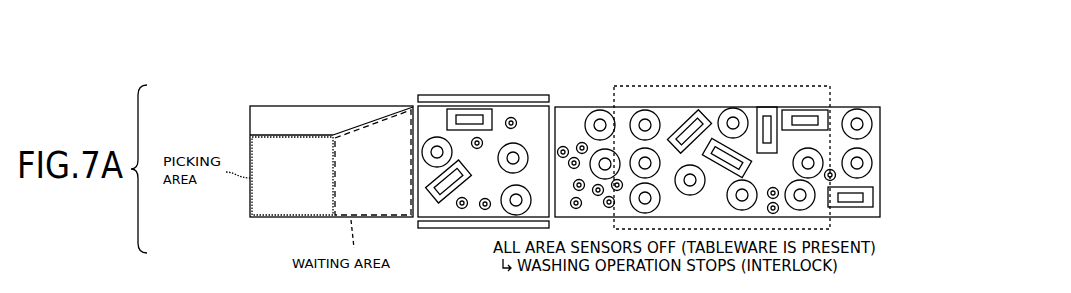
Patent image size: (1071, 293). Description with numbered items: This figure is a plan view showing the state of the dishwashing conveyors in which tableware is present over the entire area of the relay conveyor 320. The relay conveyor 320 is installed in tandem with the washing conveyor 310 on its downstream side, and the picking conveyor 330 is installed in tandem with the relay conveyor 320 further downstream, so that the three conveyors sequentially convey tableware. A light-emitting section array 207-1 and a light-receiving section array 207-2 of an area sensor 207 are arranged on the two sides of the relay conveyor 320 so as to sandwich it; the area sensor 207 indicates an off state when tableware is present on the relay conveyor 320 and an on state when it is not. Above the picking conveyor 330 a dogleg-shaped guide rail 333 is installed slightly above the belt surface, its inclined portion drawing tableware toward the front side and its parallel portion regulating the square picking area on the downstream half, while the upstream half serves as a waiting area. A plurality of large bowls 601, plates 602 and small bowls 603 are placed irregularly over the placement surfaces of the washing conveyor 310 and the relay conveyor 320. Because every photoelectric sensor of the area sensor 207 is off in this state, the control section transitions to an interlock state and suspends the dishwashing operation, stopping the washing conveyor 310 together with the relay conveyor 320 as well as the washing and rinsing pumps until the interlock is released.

The picking conveyor 330 is at (250, 120).
The guide rail 333 is at (353, 132).
The area sensor 207 is at (454, 92).
The light-emitting section array 207-1 is at (515, 93).
The light-receiving section array 207-2 is at (452, 230).
The relay conveyor 320 is at (556, 105).
The washing conveyor 310 is at (591, 106).
The large bowl 601 is at (657, 110).
The plate 602 is at (700, 120).
The small bowl 603 is at (840, 182).